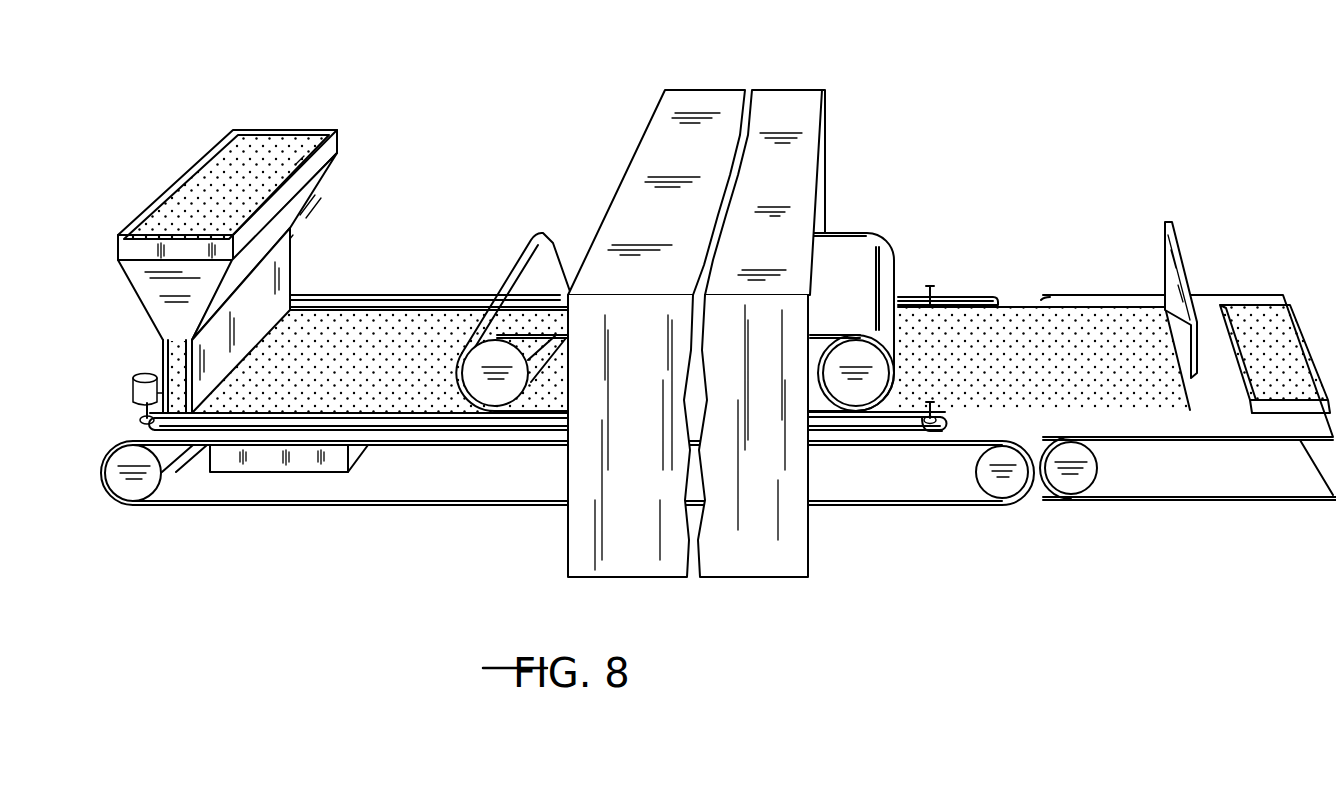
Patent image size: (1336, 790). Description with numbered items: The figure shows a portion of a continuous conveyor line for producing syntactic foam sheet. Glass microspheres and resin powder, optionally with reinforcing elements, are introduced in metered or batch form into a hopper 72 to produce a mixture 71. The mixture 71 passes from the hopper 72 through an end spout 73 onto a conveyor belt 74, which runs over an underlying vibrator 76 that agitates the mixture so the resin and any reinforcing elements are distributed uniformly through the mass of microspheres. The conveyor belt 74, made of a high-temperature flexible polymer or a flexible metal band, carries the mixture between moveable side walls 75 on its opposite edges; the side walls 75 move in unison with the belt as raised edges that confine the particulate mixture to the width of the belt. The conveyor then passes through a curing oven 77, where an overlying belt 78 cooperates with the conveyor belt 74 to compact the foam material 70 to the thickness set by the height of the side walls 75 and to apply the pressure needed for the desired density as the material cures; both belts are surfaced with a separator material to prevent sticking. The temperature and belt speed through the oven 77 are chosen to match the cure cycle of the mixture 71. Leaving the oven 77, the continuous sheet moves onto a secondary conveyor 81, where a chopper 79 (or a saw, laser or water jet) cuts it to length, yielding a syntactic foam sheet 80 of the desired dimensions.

The foam material 70 is at (445, 330).
The mixture 71 is at (292, 150).
The hopper 72 is at (313, 197).
The end spout 73 is at (293, 260).
The conveyor belt 74 is at (457, 446).
The moveable side walls 75 is at (395, 300).
The vibrator 76 is at (327, 460).
The curing oven 77 is at (716, 90).
The overlying belt 78 is at (556, 237).
The chopper 79 is at (1163, 250).
The syntactic foam sheet 80 is at (1243, 317).
The secondary conveyor 81 is at (1230, 441).